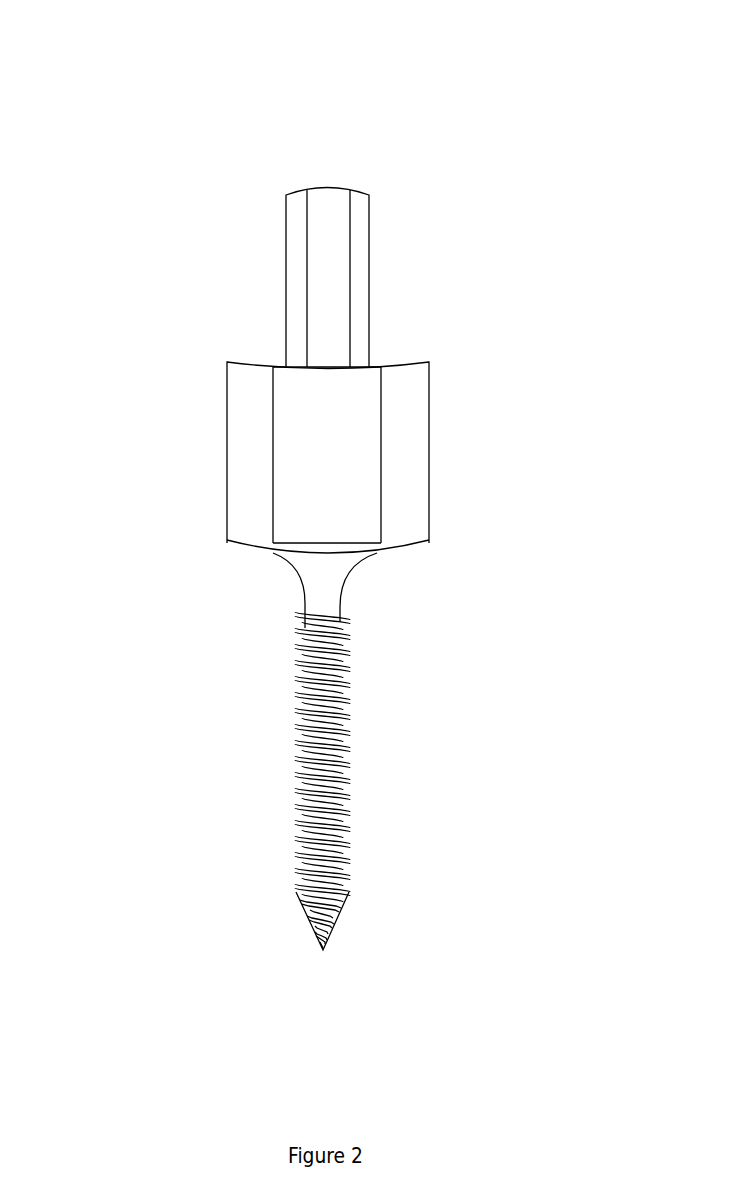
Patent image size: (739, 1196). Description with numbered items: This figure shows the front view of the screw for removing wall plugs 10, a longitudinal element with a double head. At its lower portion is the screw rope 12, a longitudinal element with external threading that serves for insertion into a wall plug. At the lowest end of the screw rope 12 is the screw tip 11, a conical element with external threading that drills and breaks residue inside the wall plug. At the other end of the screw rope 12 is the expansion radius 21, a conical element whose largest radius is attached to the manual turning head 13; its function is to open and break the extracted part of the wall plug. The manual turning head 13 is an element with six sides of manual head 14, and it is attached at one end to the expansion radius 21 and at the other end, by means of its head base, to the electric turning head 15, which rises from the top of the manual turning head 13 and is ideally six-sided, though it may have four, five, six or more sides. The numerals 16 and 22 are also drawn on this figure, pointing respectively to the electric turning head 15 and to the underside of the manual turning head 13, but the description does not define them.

The screw for removing wall plugs 10 is at (215, 273).
The screw tip 11 is at (323, 947).
The screw rope 12 is at (298, 757).
The manual turning head 13 is at (429, 400).
The sides of manual head 14 is at (352, 463).
The electric turning head 15 is at (369, 237).
The channel in post 16 is at (327, 300).
The expansion radius 21 is at (327, 587).
The shoulder underside 22 is at (383, 550).